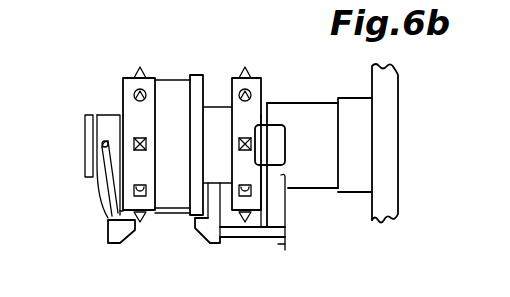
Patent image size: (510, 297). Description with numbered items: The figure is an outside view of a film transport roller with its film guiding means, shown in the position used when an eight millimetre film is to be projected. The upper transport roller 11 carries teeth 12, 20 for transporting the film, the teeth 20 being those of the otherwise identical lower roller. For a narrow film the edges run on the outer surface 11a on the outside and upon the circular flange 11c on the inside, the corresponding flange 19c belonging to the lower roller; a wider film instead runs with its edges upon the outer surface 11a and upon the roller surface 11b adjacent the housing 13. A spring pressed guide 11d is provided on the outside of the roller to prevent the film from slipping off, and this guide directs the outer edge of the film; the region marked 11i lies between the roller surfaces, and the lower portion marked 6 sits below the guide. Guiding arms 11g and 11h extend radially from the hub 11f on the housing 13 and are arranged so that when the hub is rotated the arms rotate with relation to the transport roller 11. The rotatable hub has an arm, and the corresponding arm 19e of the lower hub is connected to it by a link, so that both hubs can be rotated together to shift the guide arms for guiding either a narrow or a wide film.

The bottom portion 6 is at (163, 218).
The transport roller 11 is at (177, 93).
The outer surface 11a is at (127, 87).
The roller surface 11b is at (257, 110).
The circular flange 11c is at (195, 78).
The circular flange 19c is at (199, 117).
The spring pressed guide 11d is at (120, 228).
The hub 11f is at (301, 127).
The guiding arm 11g is at (276, 144).
The guiding arm 11h is at (211, 233).
The recess 11i is at (217, 100).
The teeth 12 is at (146, 96).
The teeth 20 is at (193, 166).
The housing 13 is at (402, 144).
The arm 19e is at (280, 246).